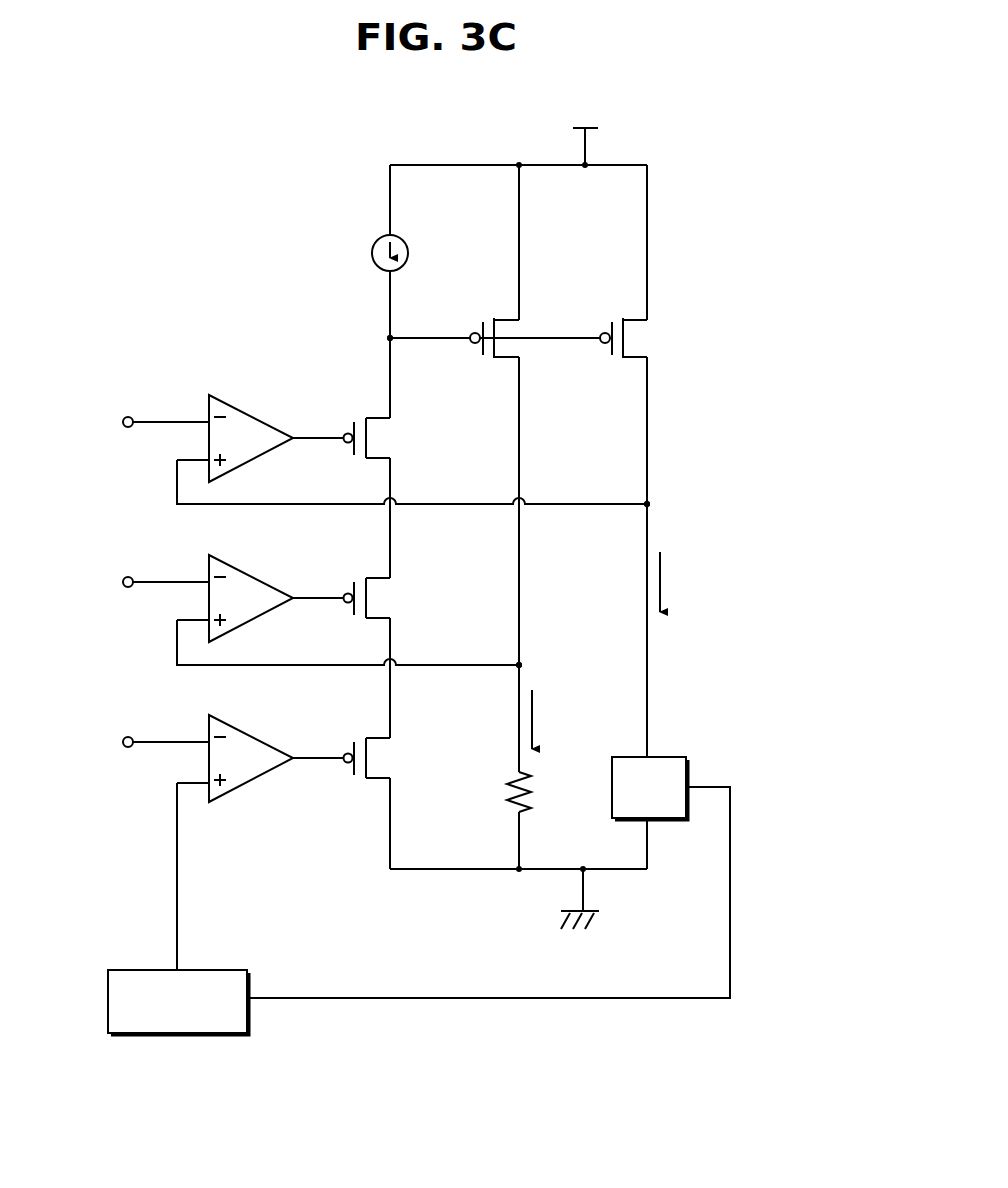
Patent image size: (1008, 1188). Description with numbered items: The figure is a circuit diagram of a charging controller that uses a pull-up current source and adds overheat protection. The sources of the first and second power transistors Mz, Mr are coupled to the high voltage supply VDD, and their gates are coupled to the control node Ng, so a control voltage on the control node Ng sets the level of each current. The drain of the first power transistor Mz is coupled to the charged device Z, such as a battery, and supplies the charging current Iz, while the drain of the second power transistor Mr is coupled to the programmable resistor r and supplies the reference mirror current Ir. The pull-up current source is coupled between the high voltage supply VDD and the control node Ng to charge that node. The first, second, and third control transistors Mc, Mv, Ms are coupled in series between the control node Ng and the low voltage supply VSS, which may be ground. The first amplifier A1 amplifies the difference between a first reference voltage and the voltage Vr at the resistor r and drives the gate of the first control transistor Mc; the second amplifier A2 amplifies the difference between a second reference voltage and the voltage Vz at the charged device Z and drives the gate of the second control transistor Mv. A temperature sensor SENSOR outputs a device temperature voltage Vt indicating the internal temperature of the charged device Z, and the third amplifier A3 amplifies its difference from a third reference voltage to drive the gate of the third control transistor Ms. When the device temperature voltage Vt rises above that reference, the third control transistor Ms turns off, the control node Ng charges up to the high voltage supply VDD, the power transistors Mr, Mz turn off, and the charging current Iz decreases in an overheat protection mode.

The high voltage supply VDD is at (585, 133).
The low voltage supply VSS is at (582, 916).
The control node Ng is at (371, 336).
The second power transistor Mr is at (511, 330).
The first power transistor Mz is at (640, 338).
The second control transistor Mv is at (358, 438).
The first control transistor Mc is at (357, 598).
The third control transistor Ms is at (357, 758).
The first amplifier A1 is at (235, 598).
The second amplifier A2 is at (235, 438).
The third amplifier A3 is at (235, 758).
The voltage at the charged device Vz is at (664, 504).
The charging current Iz is at (674, 582).
The voltage at the resistor Vr is at (506, 647).
The reference current Ir is at (545, 719).
The programmable resistor r is at (510, 792).
The charged device Z is at (650, 788).
The device temperature voltage Vt is at (192, 880).
The temperature sensor SENSOR is at (178, 1002).